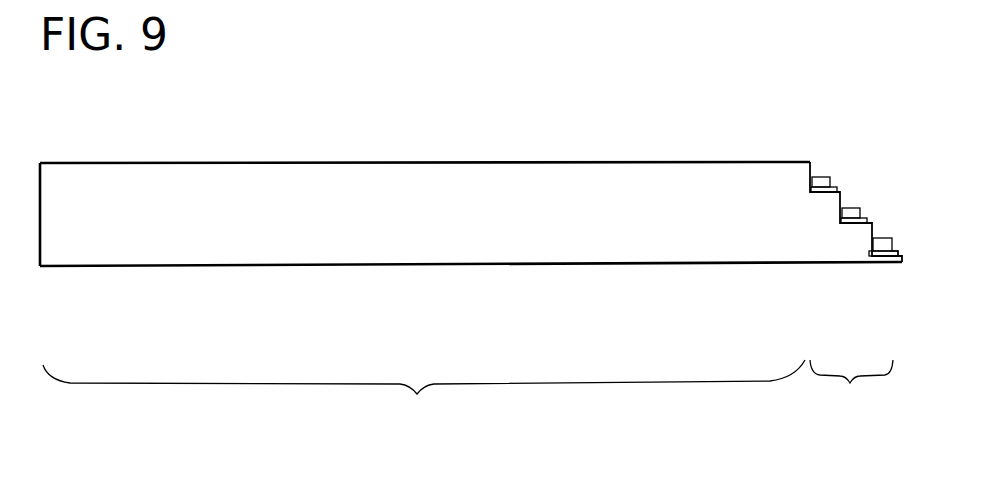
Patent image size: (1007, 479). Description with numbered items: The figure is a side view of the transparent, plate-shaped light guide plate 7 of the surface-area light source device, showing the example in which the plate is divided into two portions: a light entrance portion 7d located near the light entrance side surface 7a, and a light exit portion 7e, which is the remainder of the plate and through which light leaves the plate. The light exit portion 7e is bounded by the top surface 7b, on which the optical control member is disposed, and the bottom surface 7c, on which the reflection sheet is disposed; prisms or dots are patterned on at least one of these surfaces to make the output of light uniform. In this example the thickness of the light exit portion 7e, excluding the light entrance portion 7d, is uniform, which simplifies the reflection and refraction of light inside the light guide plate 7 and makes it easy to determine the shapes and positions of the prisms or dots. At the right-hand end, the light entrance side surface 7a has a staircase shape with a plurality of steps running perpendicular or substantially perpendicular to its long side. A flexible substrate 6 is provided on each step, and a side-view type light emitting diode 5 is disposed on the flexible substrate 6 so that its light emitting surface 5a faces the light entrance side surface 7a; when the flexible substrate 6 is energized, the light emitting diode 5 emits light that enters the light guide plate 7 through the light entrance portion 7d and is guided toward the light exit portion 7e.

The light guide plate 7 is at (739, 245).
The light entrance side surface 7a is at (812, 174).
The top surface 7b is at (347, 162).
The bottom surface 7c is at (350, 265).
The light entrance portion 7d is at (851, 390).
The light exit portion 7e is at (424, 396).
The light emitting diode 5 is at (885, 238).
The light emitting surface 5a is at (868, 246).
The flexible substrate 6 is at (895, 250).